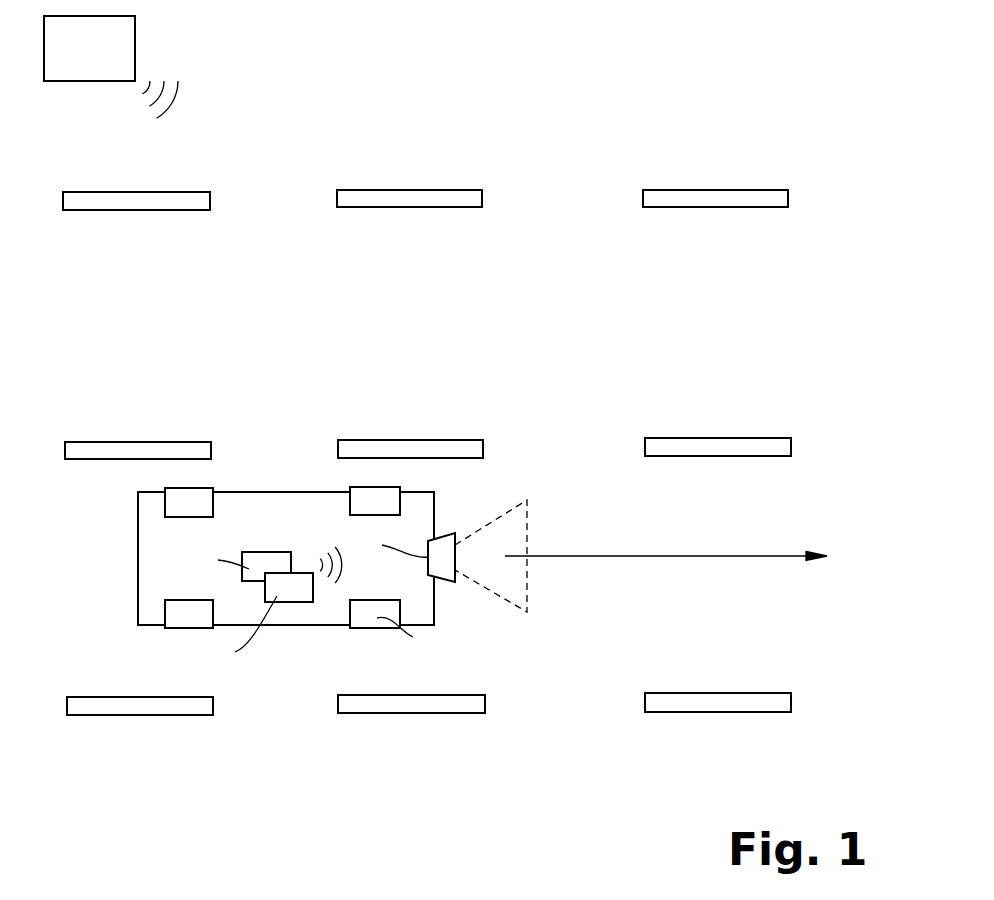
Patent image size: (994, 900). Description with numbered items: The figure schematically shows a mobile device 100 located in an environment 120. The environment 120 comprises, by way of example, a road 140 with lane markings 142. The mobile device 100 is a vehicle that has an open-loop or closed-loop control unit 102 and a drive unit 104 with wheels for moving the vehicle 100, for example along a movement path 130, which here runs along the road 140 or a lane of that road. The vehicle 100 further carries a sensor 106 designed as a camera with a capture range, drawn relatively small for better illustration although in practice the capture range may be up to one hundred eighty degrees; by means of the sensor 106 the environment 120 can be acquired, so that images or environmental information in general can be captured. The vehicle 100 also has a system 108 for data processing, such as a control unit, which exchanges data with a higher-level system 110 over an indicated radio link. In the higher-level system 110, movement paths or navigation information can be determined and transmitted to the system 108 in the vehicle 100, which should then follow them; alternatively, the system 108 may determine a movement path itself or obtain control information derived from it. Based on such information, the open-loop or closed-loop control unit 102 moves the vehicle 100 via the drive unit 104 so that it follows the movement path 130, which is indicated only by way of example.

The mobile device 100 is at (327, 627).
The open-loop or closed-loop control unit 102 is at (266, 552).
The drive unit 104 is at (373, 628).
The sensor 106 is at (443, 538).
The system for data processing 108 is at (284, 603).
The higher-level system 110 is at (135, 49).
The environment 120 is at (600, 155).
The movement path 130 is at (593, 555).
The road 140 is at (270, 230).
The lane markings 142 is at (408, 440).